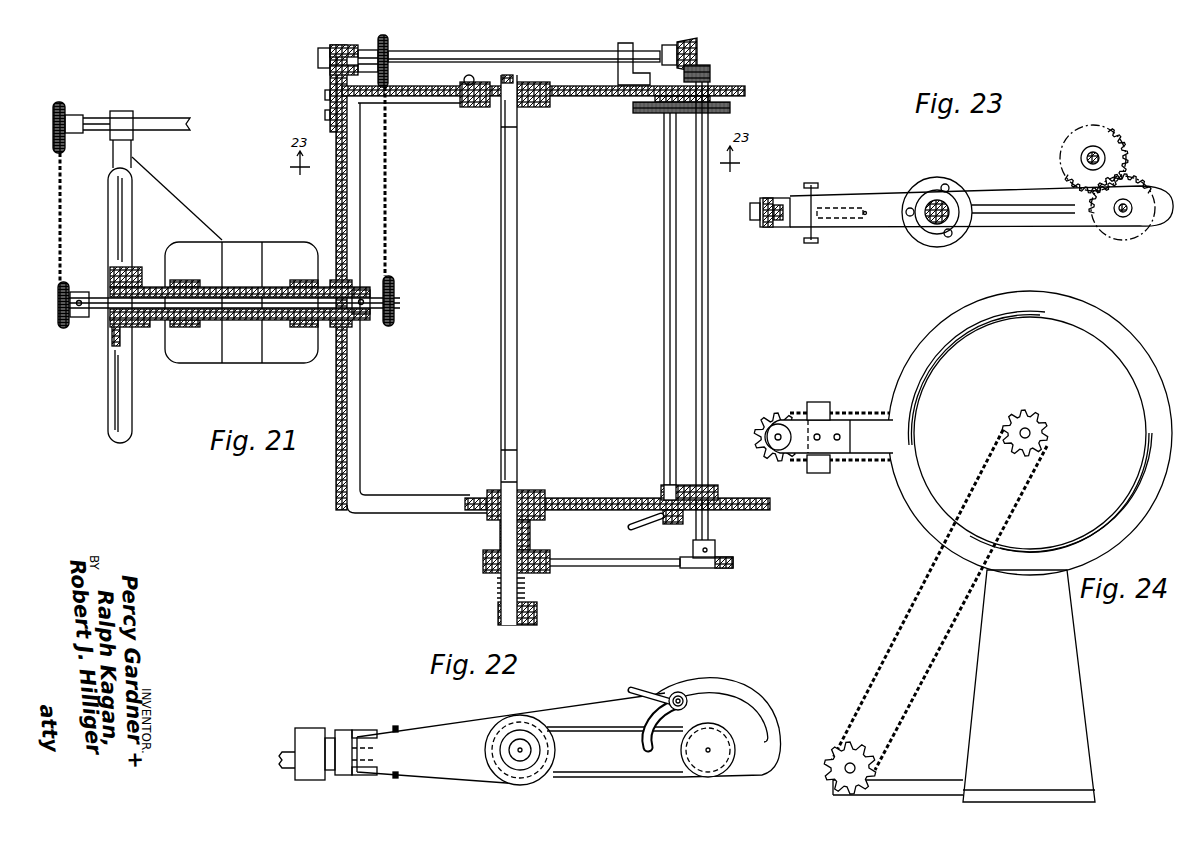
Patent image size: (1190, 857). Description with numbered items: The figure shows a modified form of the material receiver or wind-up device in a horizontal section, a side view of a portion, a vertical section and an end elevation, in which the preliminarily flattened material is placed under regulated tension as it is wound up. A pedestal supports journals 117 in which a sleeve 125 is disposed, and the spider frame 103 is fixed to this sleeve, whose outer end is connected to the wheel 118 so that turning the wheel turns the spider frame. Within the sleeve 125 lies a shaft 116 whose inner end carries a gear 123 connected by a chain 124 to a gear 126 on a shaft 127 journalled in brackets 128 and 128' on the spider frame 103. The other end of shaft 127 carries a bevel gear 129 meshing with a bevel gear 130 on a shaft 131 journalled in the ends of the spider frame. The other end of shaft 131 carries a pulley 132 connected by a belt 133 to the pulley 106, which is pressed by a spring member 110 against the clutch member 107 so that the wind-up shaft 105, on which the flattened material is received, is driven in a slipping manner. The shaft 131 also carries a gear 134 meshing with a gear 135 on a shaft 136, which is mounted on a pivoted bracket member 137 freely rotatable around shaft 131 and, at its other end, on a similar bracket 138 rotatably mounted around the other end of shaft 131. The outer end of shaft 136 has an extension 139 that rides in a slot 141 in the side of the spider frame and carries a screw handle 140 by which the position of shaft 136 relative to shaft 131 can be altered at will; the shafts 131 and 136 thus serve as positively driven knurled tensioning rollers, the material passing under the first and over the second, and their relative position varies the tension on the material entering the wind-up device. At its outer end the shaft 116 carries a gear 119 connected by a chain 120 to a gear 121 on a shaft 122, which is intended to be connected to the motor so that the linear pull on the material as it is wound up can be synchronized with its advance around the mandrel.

In FIG. 21, the spider frame 103 is at (365, 381).
In FIG. 23, the spider frame 103 is at (783, 214).
In FIG. 24, the spider frame 103 is at (875, 446).
In FIG. 22, the spider frame 103 is at (483, 714).
In FIG. 21, the wind-up shaft 105 is at (520, 299).
In FIG. 23, the wind-up shaft 105 is at (947, 204).
In FIG. 21, the pulley 106 is at (492, 571).
In FIG. 22, the pulley 106 is at (526, 718).
In FIG. 21, the clutch member 107 is at (540, 547).
In FIG. 21, the spring member 110 is at (537, 597).
In FIG. 21, the shaft 116 is at (233, 298).
In FIG. 21, the journal 117 is at (183, 287).
In FIG. 22, the journal 117 is at (308, 728).
In FIG. 21, the wheel 118 is at (132, 240).
In FIG. 24, the wheel 118 is at (1146, 374).
In FIG. 21, the gear 119 is at (57, 301).
In FIG. 24, the gear 119 is at (1042, 434).
In FIG. 21, the chain 120 is at (58, 181).
In FIG. 24, the chain 120 is at (892, 637).
In FIG. 21, the gear 121 is at (52, 113).
In FIG. 24, the gear 121 is at (883, 770).
In FIG. 21, the shaft 122 is at (178, 117).
In FIG. 21, the gear 123 is at (395, 303).
In FIG. 22, the gear 123 is at (398, 728).
In FIG. 21, the chain 124 is at (388, 262).
In FIG. 23, the chain 124 is at (813, 190).
In FIG. 24, the chain 124 is at (853, 413).
In FIG. 21, the sleeve 125 is at (271, 300).
In FIG. 21, the gear 126 is at (390, 46).
In FIG. 24, the gear 126 is at (778, 417).
In FIG. 21, the shaft 127 is at (487, 53).
In FIG. 21, the bracket 128 is at (335, 88).
In FIG. 21, the bracket 128' is at (617, 58).
In FIG. 21, the bevel gear 129 is at (689, 45).
In FIG. 21, the bevel gear 130 is at (710, 73).
In FIG. 21, the shaft 131 is at (708, 242).
In FIG. 23, the shaft 131 is at (1124, 216).
In FIG. 21, the pulley 132 is at (733, 561).
In FIG. 22, the pulley 132 is at (718, 766).
In FIG. 21, the belt 133 is at (655, 567).
In FIG. 22, the belt 133 is at (665, 779).
In FIG. 21, the gear 134 is at (731, 107).
In FIG. 23, the gear 134 is at (1133, 184).
In FIG. 21, the gear 135 is at (638, 113).
In FIG. 23, the gear 135 is at (1117, 157).
In FIG. 21, the shaft 136 is at (664, 242).
In FIG. 23, the shaft 136 is at (1093, 160).
In FIG. 21, the pivoted bracket member 137 is at (655, 98).
In FIG. 23, the pivoted bracket member 137 is at (1130, 159).
In FIG. 21, the bracket 138 is at (663, 490).
In FIG. 21, the extension 139 is at (675, 526).
In FIG. 21, the screw handle 140 is at (631, 526).
In FIG. 22, the screw handle 140 is at (641, 688).
In FIG. 22, the slot 141 is at (728, 693).